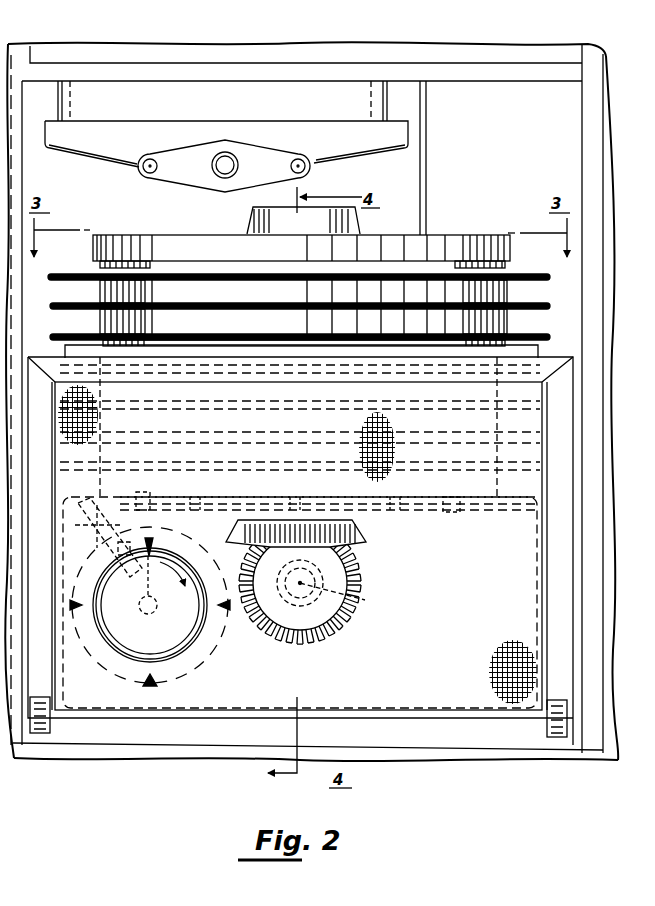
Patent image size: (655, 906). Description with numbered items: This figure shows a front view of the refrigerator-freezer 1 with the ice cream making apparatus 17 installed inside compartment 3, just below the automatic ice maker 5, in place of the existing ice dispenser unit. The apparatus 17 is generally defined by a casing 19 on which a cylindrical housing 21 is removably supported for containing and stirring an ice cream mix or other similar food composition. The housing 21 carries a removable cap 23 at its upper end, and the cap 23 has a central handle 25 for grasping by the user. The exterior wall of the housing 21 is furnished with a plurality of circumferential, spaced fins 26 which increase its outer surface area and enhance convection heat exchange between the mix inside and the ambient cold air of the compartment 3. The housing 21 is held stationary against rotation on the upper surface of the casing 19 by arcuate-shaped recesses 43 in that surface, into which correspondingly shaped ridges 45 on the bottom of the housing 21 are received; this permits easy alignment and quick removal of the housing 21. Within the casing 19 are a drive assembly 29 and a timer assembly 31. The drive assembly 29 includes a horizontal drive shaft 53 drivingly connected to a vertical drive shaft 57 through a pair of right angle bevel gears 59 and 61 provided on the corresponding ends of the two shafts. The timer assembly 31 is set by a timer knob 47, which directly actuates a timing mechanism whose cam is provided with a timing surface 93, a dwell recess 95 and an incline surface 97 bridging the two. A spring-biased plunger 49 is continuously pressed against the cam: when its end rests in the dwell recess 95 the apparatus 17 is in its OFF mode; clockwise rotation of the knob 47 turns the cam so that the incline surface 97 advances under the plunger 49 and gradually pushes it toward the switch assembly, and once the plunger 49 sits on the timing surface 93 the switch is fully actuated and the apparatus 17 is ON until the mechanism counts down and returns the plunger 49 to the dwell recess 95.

The cabinet housing 1 is at (611, 101).
The compartment 3 is at (512, 146).
The automatic ice maker 5 is at (433, 118).
The apparatus 17 is at (461, 236).
The casing 19 is at (550, 572).
The cylindrical housing 21 is at (505, 291).
The removable cap 23 is at (160, 243).
The central handle 25 is at (362, 215).
The fins 26 is at (53, 334).
The drive assembly 29 is at (336, 599).
The timer assembly 31 is at (202, 642).
The arcuate-shaped recesses 43 is at (455, 498).
The ridges 45 is at (148, 493).
The timer knob 47 is at (176, 560).
The plunger 49 is at (100, 505).
The horizontal drive shaft 53 is at (366, 600).
The vertical drive shaft 57 is at (298, 509).
The bevel gear 59 is at (322, 647).
The bevel gear 61 is at (363, 541).
The timing surface 93 is at (90, 658).
The dwell recess 95 is at (158, 576).
The incline surface 97 is at (134, 614).